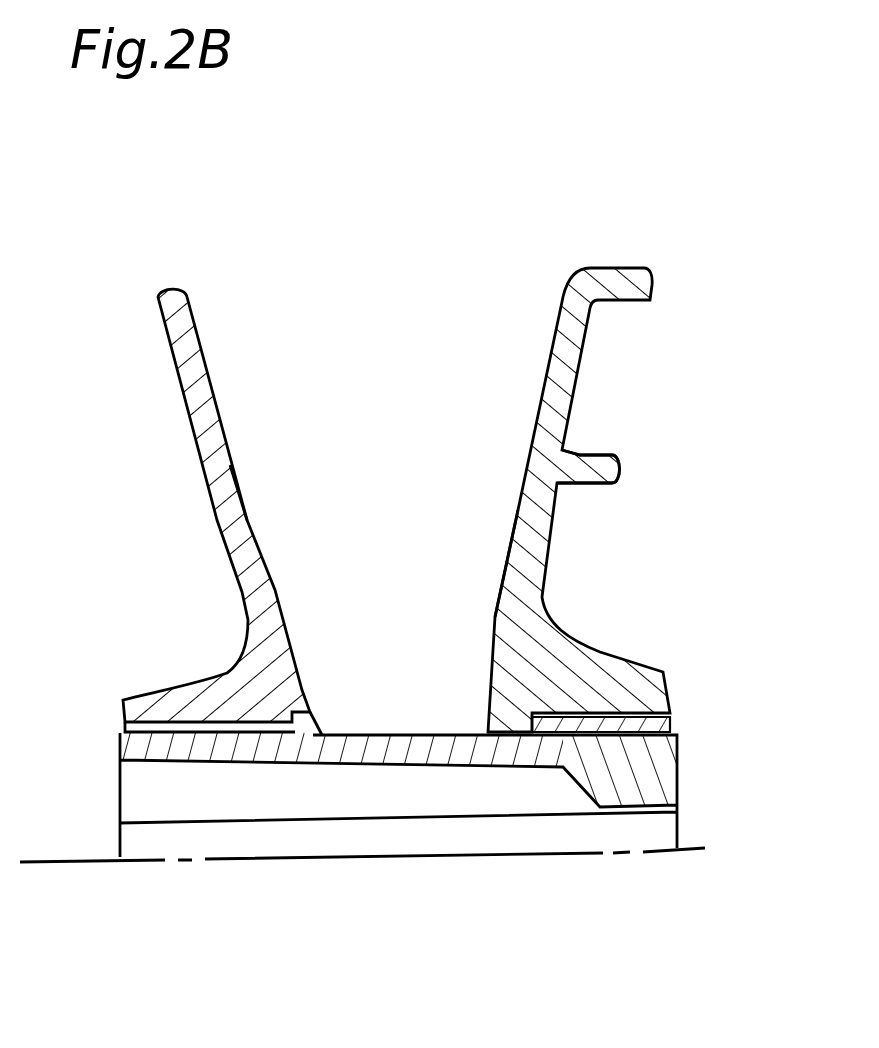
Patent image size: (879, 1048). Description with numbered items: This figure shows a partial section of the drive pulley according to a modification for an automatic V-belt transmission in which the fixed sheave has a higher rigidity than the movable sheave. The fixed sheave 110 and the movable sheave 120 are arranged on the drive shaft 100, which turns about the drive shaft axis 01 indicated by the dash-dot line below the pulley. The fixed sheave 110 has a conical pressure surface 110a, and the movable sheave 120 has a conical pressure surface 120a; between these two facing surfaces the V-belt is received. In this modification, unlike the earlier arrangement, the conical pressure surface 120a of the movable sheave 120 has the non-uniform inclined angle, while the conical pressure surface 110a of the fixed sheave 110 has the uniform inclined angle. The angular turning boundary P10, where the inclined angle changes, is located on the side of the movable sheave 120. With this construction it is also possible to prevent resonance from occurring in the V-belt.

The fixed sheave 110 is at (197, 410).
The conical pressure surface of the fixed sheave 110a is at (250, 505).
The movable sheave 120 is at (565, 387).
The conical pressure surface of the movable sheave 120a is at (723, 450).
The angular turning boundary P10 is at (495, 617).
The drive shaft 100 is at (657, 778).
The drive shaft axis 01 is at (70, 862).